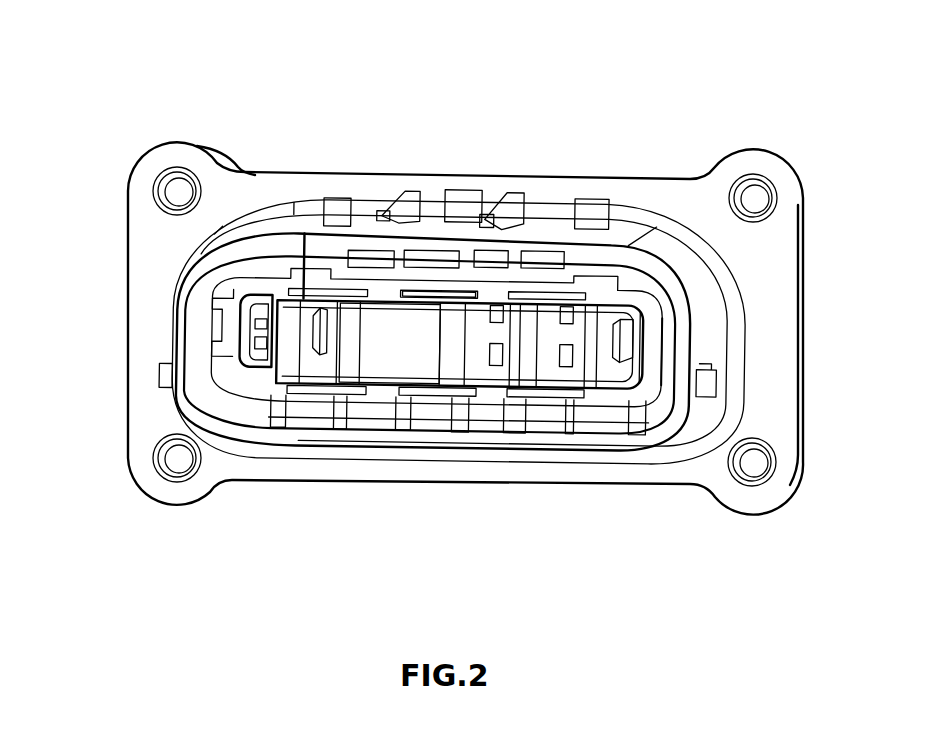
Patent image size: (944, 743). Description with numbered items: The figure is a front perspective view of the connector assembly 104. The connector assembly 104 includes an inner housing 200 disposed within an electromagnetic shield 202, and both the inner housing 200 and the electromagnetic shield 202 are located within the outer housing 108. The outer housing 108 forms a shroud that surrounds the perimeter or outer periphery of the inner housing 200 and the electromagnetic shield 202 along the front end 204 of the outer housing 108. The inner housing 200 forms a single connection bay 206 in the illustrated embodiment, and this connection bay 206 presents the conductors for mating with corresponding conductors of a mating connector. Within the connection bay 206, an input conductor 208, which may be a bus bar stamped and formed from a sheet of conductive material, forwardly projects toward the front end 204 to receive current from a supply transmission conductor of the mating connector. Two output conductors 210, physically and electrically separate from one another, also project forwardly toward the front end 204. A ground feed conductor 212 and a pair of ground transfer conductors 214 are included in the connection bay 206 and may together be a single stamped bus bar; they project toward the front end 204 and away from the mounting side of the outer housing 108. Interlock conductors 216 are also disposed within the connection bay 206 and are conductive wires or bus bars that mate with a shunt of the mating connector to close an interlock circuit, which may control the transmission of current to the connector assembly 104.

The connector assembly 104 is at (789, 94).
The outer housing 108 is at (615, 243).
The inner housing 200 is at (378, 332).
The electromagnetic shield 202 is at (450, 297).
The front end 204 is at (550, 247).
The connection bay 206 is at (690, 350).
The input conductor 208 is at (318, 347).
The output conductors 210 is at (495, 355).
The ground feed conductor 212 is at (627, 340).
The ground transfer conductors 214 is at (562, 363).
The interlock conductors 216 is at (262, 327).